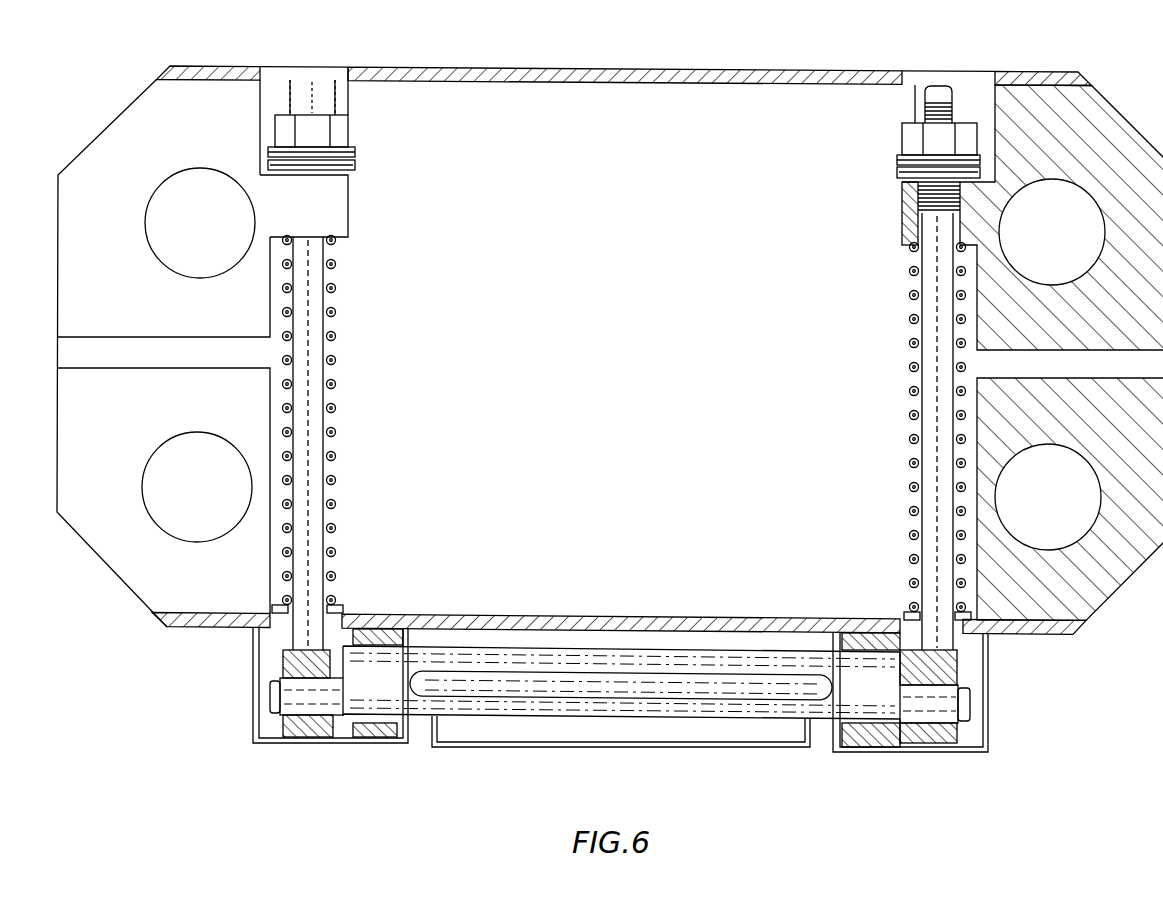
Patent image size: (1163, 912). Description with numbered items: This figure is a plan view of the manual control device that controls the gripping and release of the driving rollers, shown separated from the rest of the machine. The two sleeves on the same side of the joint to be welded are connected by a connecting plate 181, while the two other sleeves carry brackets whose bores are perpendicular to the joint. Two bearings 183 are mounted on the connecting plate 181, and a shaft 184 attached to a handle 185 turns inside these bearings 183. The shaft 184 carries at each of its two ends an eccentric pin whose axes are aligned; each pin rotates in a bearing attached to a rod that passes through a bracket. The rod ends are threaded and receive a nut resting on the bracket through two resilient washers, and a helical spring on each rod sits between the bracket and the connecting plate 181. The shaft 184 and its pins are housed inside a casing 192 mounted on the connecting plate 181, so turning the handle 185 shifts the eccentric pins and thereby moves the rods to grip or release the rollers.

The connecting plate 181 is at (620, 623).
The bearing 183 is at (385, 638).
The shaft 184 is at (647, 702).
The handle 185 is at (738, 683).
The casing 192 is at (507, 748).